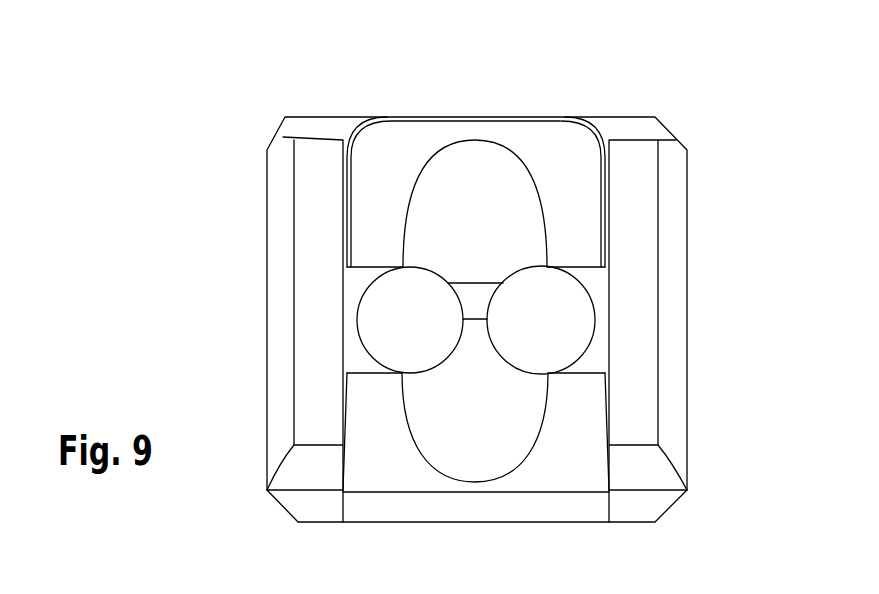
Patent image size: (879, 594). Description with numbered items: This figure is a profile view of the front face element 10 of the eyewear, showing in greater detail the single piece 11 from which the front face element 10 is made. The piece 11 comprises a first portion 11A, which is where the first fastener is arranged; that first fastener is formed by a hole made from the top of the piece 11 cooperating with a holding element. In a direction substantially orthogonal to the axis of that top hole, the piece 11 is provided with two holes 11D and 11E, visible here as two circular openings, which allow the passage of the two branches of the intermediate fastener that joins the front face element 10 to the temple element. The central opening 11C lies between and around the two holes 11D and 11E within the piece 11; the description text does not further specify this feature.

The front face element 10 is at (700, 112).
The piece 11 is at (320, 512).
The first portion 11A is at (287, 325).
The central window opening 11C is at (478, 185).
The hole 11D is at (388, 302).
The hole 11E is at (552, 318).